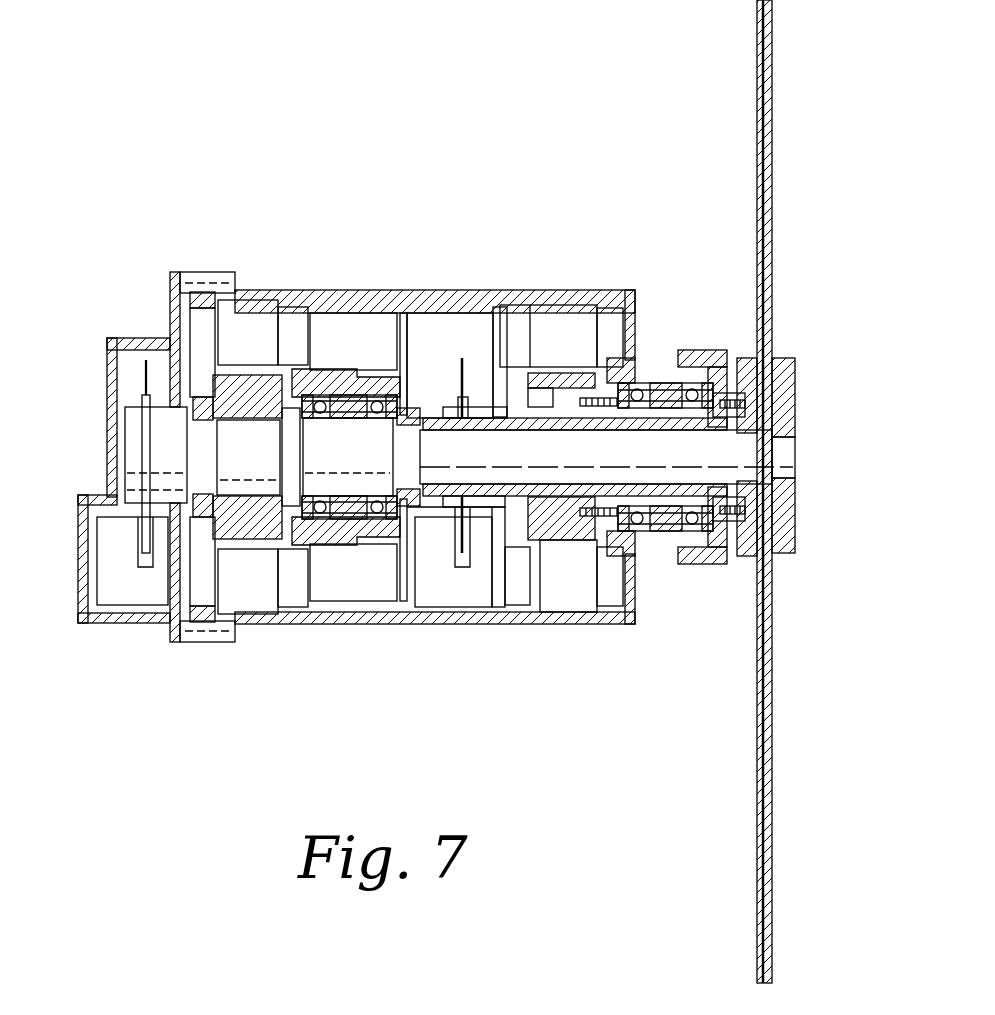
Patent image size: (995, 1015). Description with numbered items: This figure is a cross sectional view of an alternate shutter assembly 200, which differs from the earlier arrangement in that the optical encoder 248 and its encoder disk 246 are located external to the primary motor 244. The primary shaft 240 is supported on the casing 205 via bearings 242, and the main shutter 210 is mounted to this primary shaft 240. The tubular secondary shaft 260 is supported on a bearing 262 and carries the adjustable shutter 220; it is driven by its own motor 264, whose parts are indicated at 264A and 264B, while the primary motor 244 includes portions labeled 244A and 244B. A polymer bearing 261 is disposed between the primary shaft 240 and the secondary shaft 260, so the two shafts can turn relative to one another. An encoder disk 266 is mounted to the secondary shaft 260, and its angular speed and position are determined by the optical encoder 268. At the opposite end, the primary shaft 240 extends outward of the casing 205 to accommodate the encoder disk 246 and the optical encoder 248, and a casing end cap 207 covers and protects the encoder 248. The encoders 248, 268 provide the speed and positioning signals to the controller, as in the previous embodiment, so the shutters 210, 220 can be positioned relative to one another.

The shutter assembly 200 is at (95, 228).
The casing 205 is at (253, 623).
The casing end cap 207 is at (128, 620).
The main shutter 210 is at (772, 852).
The adjustable shutter 220 is at (758, 810).
The primary shaft 240 is at (633, 443).
The bearings 242 is at (332, 518).
The primary motor 244 is at (252, 590).
The rotor hub 244A is at (250, 388).
The rotor magnet 244B is at (240, 323).
The encoder disk 246 is at (142, 380).
The optical encoder 248 is at (122, 583).
The secondary shaft 260 is at (642, 498).
The polymer bearing 261 is at (705, 427).
The bearing 262 is at (685, 523).
The motor 264 is at (572, 328).
The stator core 264A is at (553, 523).
The stator winding 264B is at (578, 597).
The encoder disk 266 is at (462, 372).
The optical encoder 268 is at (427, 587).